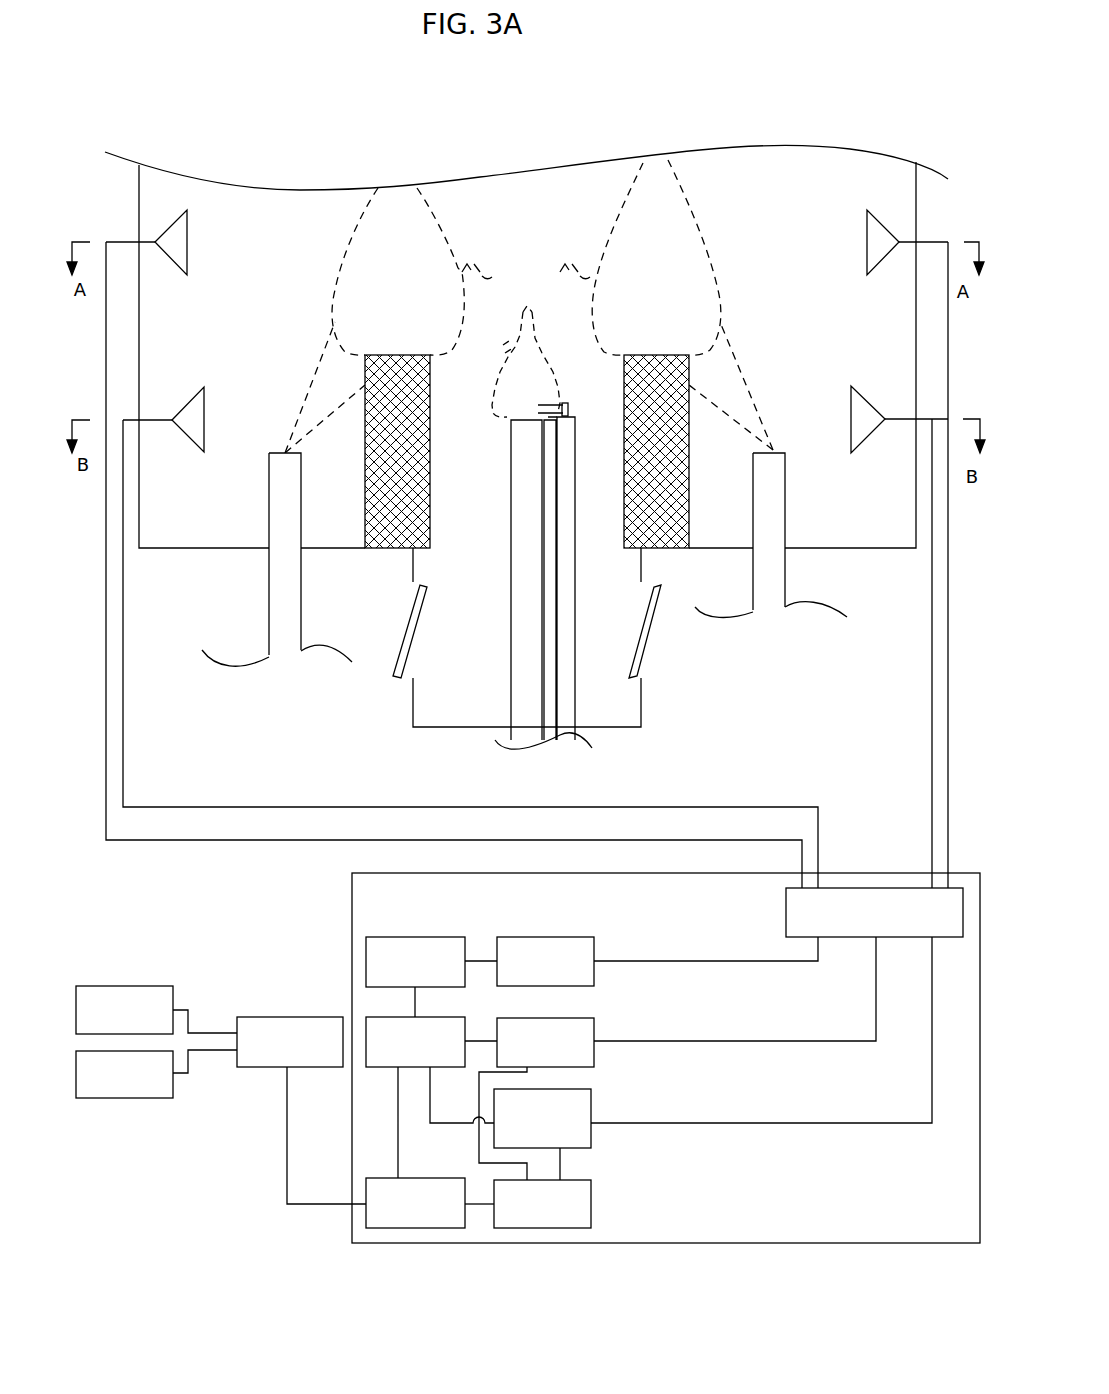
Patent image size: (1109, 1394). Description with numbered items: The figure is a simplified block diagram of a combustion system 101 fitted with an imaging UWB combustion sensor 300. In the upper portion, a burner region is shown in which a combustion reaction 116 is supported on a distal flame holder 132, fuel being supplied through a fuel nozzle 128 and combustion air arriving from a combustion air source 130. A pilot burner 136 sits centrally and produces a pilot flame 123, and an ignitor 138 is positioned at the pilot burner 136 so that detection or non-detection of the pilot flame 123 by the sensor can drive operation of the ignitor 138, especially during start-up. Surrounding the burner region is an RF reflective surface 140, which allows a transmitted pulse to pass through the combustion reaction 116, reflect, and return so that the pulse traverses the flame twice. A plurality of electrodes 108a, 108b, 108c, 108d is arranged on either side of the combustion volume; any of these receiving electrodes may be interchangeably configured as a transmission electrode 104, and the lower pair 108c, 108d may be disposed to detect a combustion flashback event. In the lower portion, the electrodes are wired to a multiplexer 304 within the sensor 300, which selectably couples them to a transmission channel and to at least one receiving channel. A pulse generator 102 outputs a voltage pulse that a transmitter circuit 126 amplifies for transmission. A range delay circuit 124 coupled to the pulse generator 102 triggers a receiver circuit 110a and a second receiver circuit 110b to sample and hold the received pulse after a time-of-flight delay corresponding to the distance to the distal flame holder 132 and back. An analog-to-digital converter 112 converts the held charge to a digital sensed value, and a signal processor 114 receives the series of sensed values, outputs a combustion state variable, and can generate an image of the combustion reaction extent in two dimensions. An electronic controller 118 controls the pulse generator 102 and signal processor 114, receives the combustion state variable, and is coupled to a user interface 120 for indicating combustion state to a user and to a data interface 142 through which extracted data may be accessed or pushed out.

The combustion system 101 is at (340, 130).
The transmission electrode 104 is at (187, 228).
The receiving electrode 108a is at (183, 242).
The receiving electrode 108b is at (864, 242).
The receiving electrode 108c is at (203, 419).
The receiving electrode 108d is at (863, 419).
The combustion reaction 116 is at (529, 306).
The pilot flame 123 is at (520, 358).
The fuel nozzle 128 is at (269, 532).
The combustion air source 130 is at (458, 728).
The distal flame holder 132 is at (375, 355).
The pilot burner 136 is at (511, 443).
The ignitor 138 is at (568, 412).
The RF reflective surface 140 is at (165, 548).
The imaging UWB combustion sensor 300 is at (352, 910).
The multiplexer 304 is at (786, 912).
The pulse generator 102 is at (431, 977).
The transmitter circuit 126 is at (657, 961).
The range delay circuit 124 is at (431, 1097).
The receiver circuit 110a is at (677, 1058).
The second receiver circuit 110b is at (713, 1058).
The signal processor 114 is at (430, 1203).
The analog-to-digital converter 112 is at (542, 1204).
The electronic controller 118 is at (301, 1110).
The data interface 142 is at (156, 1010).
The user interface 120 is at (156, 1074).